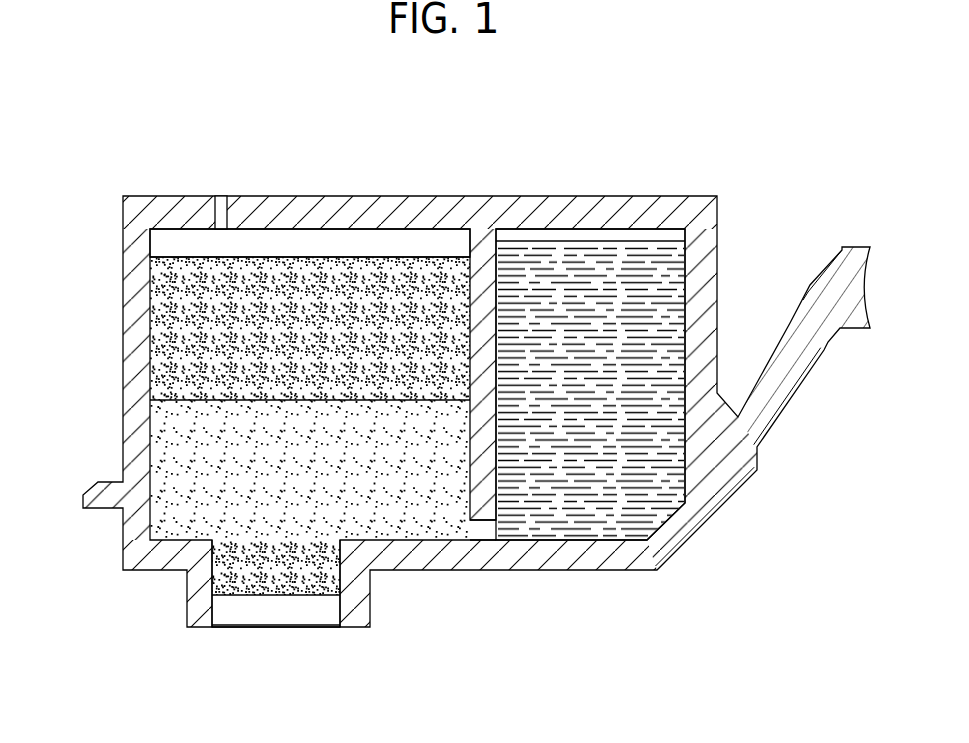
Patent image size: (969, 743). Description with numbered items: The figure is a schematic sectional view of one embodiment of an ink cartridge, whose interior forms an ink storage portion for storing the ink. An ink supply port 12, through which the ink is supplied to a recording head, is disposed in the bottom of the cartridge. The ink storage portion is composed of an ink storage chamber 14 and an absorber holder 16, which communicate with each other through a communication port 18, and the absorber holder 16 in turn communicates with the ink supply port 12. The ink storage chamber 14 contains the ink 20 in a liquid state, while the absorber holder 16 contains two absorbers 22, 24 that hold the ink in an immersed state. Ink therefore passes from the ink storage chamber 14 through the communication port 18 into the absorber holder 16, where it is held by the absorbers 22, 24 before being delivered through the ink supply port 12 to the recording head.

The ink supply port 12 is at (285, 610).
The ink storage chamber 14 is at (612, 237).
The absorber holder 16 is at (330, 245).
The communication port 18 is at (483, 532).
The ink 20 is at (605, 525).
The absorber 22 is at (176, 438).
The absorber 24 is at (176, 317).